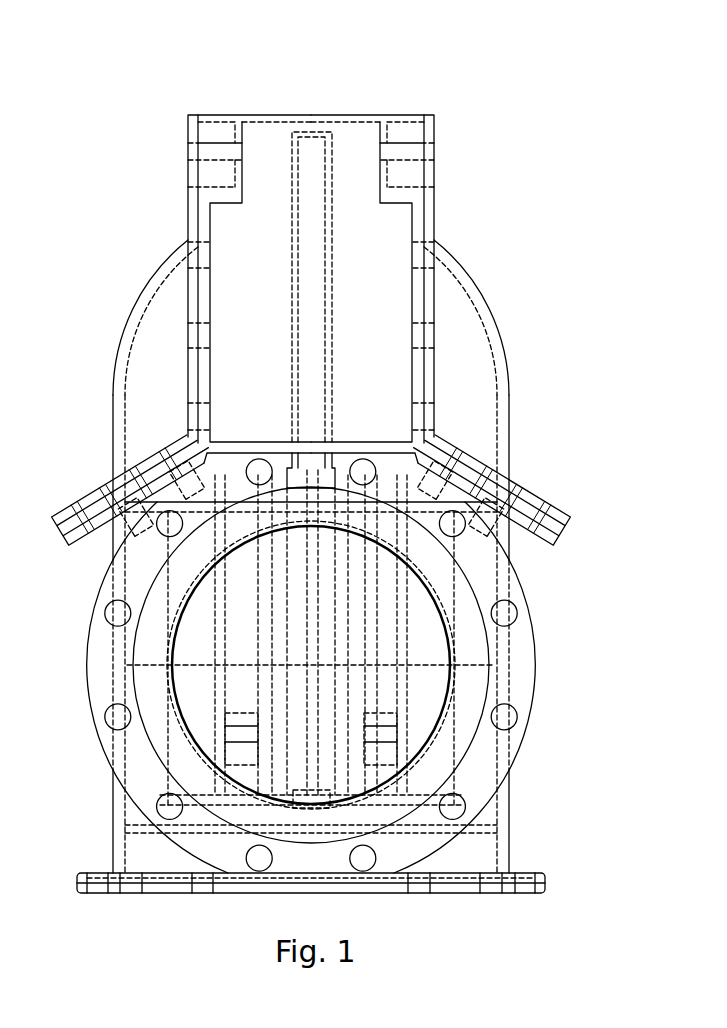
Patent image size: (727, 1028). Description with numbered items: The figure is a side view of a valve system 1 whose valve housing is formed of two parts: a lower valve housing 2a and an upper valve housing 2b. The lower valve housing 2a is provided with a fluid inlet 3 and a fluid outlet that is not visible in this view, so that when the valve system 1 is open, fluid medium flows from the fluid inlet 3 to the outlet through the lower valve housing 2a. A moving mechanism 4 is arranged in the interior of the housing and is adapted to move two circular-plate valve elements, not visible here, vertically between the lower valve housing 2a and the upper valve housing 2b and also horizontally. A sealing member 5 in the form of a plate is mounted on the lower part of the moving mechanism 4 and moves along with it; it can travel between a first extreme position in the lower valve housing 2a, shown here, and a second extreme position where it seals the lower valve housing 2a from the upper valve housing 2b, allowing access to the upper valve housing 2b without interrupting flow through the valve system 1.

The valve system 1 is at (579, 75).
The lower valve housing 2a is at (522, 637).
The upper valve housing 2b is at (432, 322).
The fluid inlet 3 is at (348, 732).
The moving mechanism 4 is at (310, 288).
The sealing member 5 is at (150, 827).